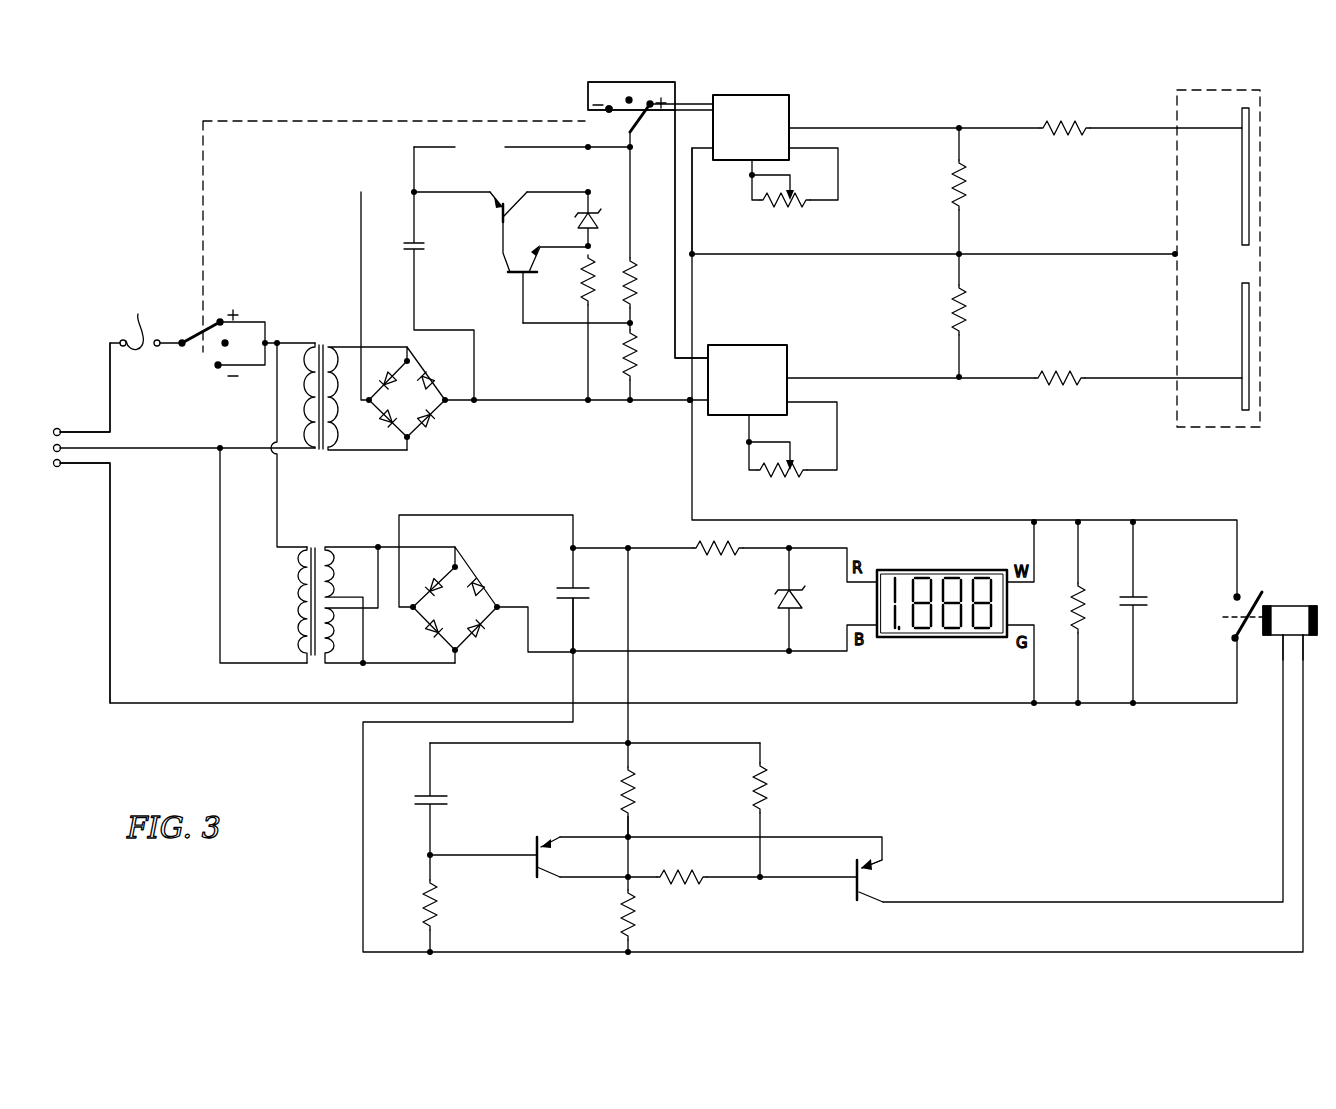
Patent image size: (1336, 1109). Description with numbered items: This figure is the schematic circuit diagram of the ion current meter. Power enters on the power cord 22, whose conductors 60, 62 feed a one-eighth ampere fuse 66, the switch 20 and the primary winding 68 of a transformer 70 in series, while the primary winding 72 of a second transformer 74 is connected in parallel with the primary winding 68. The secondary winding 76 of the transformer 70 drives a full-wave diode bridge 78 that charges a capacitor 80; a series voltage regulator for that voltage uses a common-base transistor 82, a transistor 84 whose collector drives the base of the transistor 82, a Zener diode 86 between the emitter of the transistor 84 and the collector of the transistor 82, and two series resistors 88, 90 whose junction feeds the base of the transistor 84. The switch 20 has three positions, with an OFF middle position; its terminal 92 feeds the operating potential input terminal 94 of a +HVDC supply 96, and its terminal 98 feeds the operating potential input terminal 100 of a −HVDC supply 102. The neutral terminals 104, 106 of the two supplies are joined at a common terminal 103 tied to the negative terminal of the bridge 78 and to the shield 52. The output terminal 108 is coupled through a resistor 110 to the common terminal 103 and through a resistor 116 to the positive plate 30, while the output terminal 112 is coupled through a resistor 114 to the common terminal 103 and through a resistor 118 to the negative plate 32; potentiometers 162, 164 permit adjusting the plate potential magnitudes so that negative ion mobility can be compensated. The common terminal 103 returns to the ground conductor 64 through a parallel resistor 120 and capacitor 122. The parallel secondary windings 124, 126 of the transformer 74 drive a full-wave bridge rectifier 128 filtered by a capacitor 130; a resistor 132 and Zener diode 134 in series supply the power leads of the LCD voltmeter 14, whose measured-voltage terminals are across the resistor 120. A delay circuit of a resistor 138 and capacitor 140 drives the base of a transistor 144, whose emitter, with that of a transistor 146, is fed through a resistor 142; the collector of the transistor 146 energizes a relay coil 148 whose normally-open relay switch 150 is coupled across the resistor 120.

The LCD voltmeter 14 is at (940, 637).
The switch 20 is at (570, 104).
The power cord 22 is at (50, 470).
The positive plate 30 is at (1250, 176).
The negative plate 32 is at (1250, 338).
The shield 52 is at (1177, 110).
The conductor 60 is at (85, 427).
The conductor 62 is at (188, 443).
The ground conductor 64 is at (85, 467).
The fuse 66 is at (133, 330).
The primary winding 68 is at (290, 401).
The transformer 70 is at (312, 338).
The primary winding 72 is at (278, 606).
The transformer 74 is at (316, 536).
The secondary winding 76 is at (352, 426).
The full-wave diode bridge 78 is at (450, 438).
The capacitor 80 is at (420, 250).
The transistor 82 is at (498, 214).
The transistor 84 is at (499, 277).
The Zener diode 86 is at (577, 218).
The resistor 88 is at (635, 287).
The resistor 90 is at (639, 365).
The terminal 92 is at (652, 112).
The operating potential input terminal 94 is at (712, 109).
The +HVDC supply 96 is at (790, 113).
The terminal 98 is at (609, 113).
The operating potential input terminal 100 is at (703, 349).
The −HVDC supply 102 is at (790, 351).
The common terminal 103 is at (688, 403).
The neutral terminal 104 is at (702, 150).
The neutral terminal 106 is at (703, 418).
The high-magnitude potential output terminal 108 is at (790, 128).
The resistor 110 is at (967, 182).
The high-magnitude potential output terminal 112 is at (790, 373).
The resistor 114 is at (966, 310).
The resistor 116 is at (1073, 127).
The resistor 118 is at (1059, 376).
The resistor 120 is at (1084, 600).
The capacitor 122 is at (1142, 593).
The secondary winding 124 is at (336, 560).
The secondary winding 126 is at (338, 652).
The full-wave bridge rectifier 128 is at (492, 578).
The capacitor 130 is at (580, 600).
The resistor 132 is at (706, 553).
The Zener diode 134 is at (778, 605).
The resistor 138 is at (440, 895).
The capacitor 140 is at (440, 792).
The resistor 142 is at (636, 787).
The transistor 144 is at (522, 880).
The transistor 146 is at (855, 893).
The relay coil 148 is at (1290, 609).
The relay switch 150 is at (1262, 588).
The potentiometer 162 is at (802, 207).
The potentiometer 164 is at (800, 476).